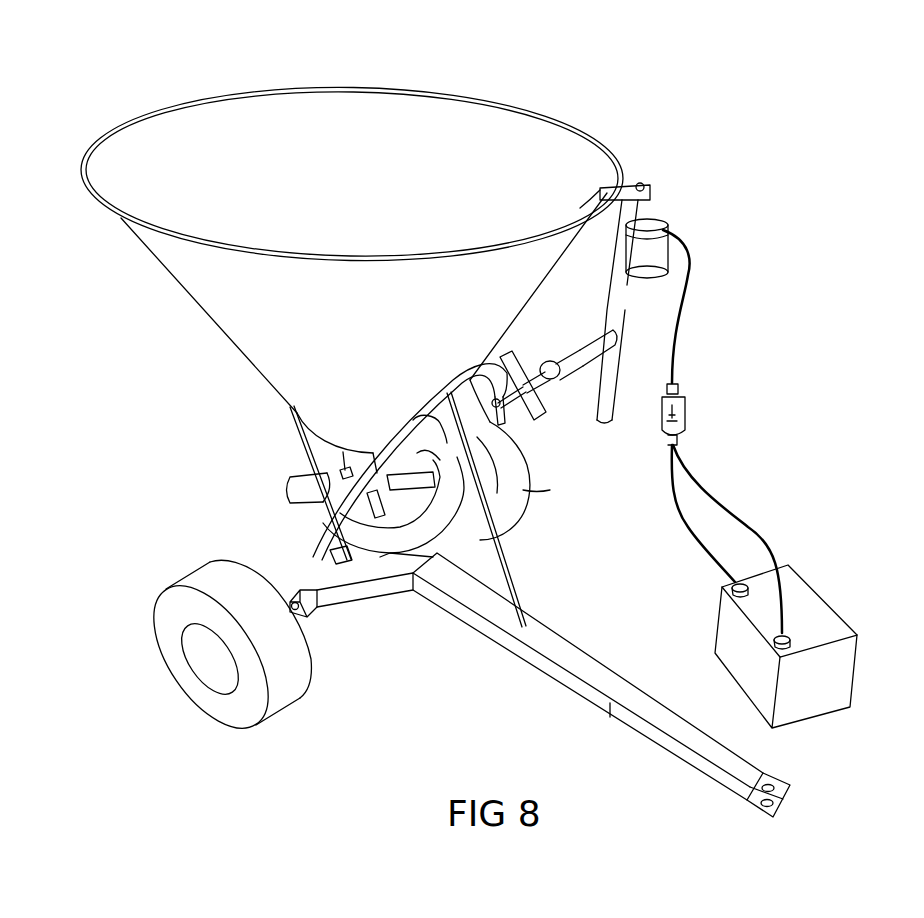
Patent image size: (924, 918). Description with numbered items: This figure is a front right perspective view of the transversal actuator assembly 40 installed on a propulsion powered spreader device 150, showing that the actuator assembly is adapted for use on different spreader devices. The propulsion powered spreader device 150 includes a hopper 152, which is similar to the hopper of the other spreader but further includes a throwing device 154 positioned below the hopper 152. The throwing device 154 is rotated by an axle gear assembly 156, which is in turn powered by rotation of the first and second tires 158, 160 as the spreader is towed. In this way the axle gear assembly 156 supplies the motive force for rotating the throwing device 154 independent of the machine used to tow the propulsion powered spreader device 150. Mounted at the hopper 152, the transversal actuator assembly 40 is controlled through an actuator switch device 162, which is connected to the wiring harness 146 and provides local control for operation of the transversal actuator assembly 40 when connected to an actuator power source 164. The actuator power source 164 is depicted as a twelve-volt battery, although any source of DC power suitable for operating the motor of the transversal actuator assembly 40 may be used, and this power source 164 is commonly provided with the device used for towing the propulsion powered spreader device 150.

The propulsion powered spreader device 150 is at (578, 114).
The hopper 152 is at (193, 103).
The throwing device 154 is at (290, 497).
The axle gear assembly 156 is at (365, 573).
The first tire 158 is at (292, 687).
The second tire 160 is at (545, 478).
The transversal actuator assembly 40 is at (704, 305).
The wiring harness 146 is at (680, 358).
The actuator switch device 162 is at (684, 437).
The actuator power source 164 is at (810, 605).